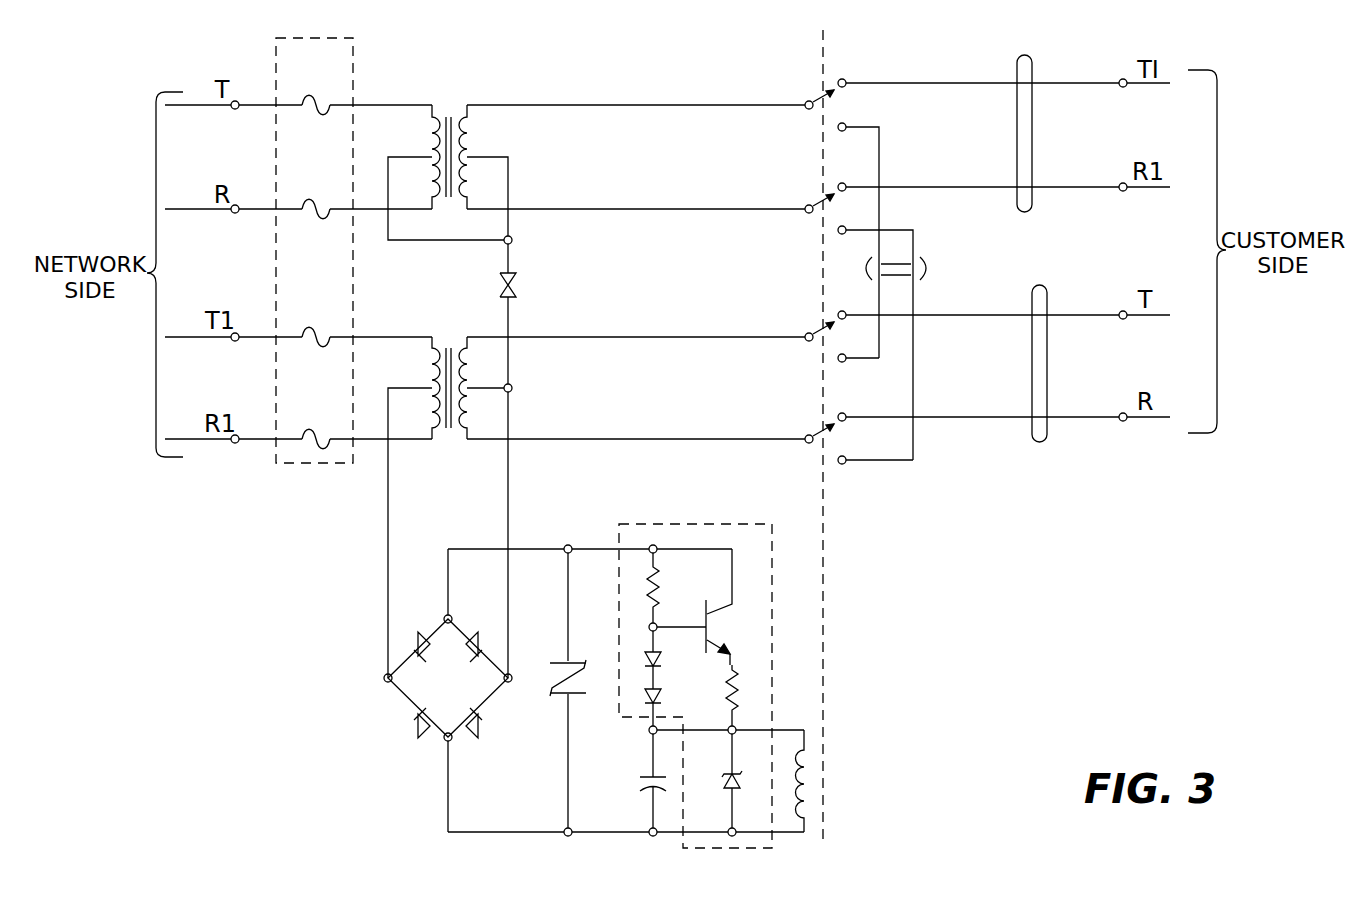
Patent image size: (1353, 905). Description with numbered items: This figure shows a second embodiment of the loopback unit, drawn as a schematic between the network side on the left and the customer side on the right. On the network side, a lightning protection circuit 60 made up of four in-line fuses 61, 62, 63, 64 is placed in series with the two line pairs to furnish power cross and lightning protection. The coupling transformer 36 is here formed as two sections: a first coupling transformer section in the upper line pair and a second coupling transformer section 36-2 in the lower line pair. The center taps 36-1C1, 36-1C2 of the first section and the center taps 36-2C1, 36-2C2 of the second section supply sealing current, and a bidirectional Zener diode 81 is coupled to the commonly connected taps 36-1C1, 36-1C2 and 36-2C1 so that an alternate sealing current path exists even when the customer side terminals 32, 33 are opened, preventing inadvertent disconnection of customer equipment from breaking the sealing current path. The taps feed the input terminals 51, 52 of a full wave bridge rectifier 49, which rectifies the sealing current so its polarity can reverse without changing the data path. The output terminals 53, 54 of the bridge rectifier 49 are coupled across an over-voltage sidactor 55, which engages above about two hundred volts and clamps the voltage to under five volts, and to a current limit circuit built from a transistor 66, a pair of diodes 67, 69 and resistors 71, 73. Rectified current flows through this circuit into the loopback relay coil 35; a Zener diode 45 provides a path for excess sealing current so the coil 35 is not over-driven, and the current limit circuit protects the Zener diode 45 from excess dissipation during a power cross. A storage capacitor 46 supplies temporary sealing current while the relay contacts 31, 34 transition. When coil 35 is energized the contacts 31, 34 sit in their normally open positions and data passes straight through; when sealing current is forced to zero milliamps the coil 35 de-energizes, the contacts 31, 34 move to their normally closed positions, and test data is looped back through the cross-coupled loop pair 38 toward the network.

The lightning protection circuit 60 is at (353, 62).
The in-line fuse 61 is at (316, 95).
The in-line fuse 62 is at (316, 199).
The in-line fuse 63 is at (316, 327).
The in-line fuse 64 is at (316, 429).
The coupling transformer 36 is at (461, 147).
The center tap of first coupling transformer section 36-1C1 is at (478, 157).
The center tap of first coupling transformer section 36-1C2 is at (402, 157).
The second coupling transformer section 36-2 is at (473, 481).
The center tap of second coupling transformer section 36-2C1 is at (485, 388).
The transformer center tap 36-2C2 is at (402, 388).
The bidirectional Zener diode 81 is at (514, 284).
The relay contacts 31 is at (808, 152).
The relay contacts 34 is at (818, 388).
The cross-coupled loop pair 38 is at (932, 268).
The customer side connector 32 is at (1030, 56).
The customer side connector 33 is at (1044, 444).
The full wave bridge rectifier 49 is at (436, 690).
The input terminal of bridge rectifier 51 is at (384, 678).
The input terminal of bridge rectifier 52 is at (511, 681).
The output terminal of bridge rectifier 53 is at (445, 617).
The output terminal of bridge rectifier 54 is at (445, 740).
The over-voltage sidactor 55 is at (560, 697).
The resistor 71 is at (660, 582).
The transistor 66 is at (718, 627).
The diode 67 is at (662, 660).
The diode 69 is at (662, 697).
The resistor 73 is at (740, 682).
The storage capacitor 46 is at (645, 781).
The Zener diode 45 is at (728, 791).
The loopback relay coil 35 is at (814, 733).